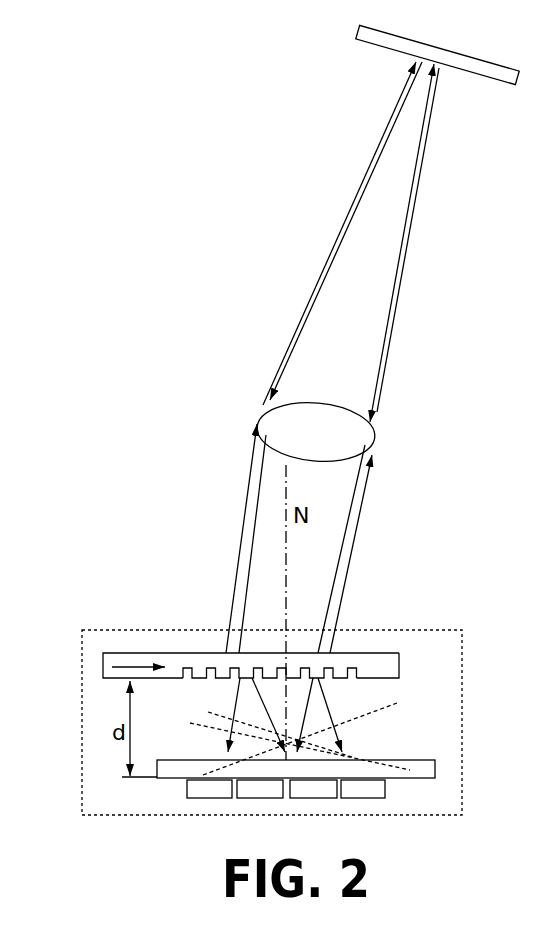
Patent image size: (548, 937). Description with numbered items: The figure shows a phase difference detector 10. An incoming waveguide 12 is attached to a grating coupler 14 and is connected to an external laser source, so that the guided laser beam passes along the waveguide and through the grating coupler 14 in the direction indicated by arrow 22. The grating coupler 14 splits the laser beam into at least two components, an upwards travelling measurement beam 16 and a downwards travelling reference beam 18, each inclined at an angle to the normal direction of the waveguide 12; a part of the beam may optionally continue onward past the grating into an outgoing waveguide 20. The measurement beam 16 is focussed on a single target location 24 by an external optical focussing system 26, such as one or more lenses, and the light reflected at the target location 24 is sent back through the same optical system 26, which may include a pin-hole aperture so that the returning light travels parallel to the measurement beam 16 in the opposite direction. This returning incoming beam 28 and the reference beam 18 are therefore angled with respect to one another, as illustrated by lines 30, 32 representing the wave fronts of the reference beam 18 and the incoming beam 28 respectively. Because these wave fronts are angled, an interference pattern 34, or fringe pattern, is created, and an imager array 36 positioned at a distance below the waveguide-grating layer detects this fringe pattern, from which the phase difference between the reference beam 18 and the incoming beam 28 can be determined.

The phase difference detector 10 is at (442, 630).
The incoming waveguide 12 is at (100, 667).
The grating coupler 14 is at (348, 668).
The measurement beam 16 is at (312, 307).
The reference beam 18 is at (253, 702).
The outgoing waveguide 20 is at (402, 667).
The arrow 22 is at (158, 666).
The target location 24 is at (435, 53).
The external optical focussing system 26 is at (333, 447).
The incoming beam 28 is at (405, 92).
The wave front of the reference beam 30 is at (372, 712).
The wave front of the incoming beam 32 is at (352, 757).
The interference pattern 34 is at (437, 768).
The imager array 36 is at (400, 842).